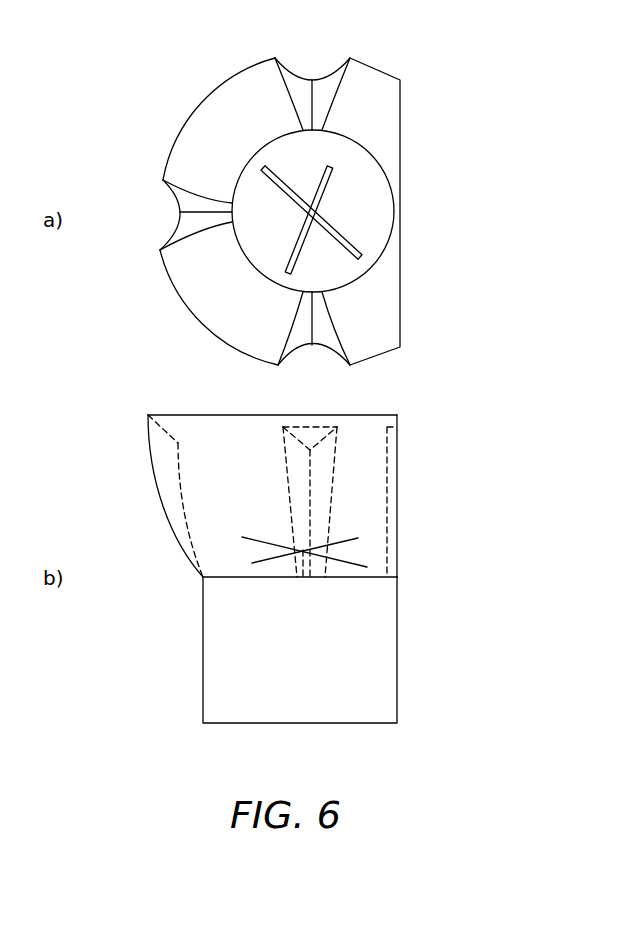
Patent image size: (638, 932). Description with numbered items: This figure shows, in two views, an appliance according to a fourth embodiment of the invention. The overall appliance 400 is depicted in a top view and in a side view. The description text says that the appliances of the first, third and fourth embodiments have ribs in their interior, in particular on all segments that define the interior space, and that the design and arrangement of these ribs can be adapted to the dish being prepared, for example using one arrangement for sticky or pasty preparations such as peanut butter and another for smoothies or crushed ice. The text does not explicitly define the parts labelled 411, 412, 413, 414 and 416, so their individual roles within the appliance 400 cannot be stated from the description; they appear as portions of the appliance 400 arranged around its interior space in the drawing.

The nozzle tip 400 is at (415, 133).
The notch groove 411 is at (312, 72).
The cross-shaped protrusion 412 is at (342, 232).
The side wall 413 is at (399, 280).
The base portion 414 is at (383, 672).
The lobe wing 416 is at (172, 538).